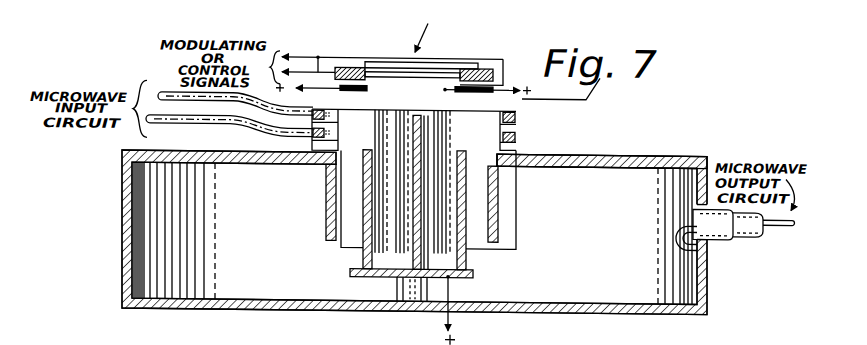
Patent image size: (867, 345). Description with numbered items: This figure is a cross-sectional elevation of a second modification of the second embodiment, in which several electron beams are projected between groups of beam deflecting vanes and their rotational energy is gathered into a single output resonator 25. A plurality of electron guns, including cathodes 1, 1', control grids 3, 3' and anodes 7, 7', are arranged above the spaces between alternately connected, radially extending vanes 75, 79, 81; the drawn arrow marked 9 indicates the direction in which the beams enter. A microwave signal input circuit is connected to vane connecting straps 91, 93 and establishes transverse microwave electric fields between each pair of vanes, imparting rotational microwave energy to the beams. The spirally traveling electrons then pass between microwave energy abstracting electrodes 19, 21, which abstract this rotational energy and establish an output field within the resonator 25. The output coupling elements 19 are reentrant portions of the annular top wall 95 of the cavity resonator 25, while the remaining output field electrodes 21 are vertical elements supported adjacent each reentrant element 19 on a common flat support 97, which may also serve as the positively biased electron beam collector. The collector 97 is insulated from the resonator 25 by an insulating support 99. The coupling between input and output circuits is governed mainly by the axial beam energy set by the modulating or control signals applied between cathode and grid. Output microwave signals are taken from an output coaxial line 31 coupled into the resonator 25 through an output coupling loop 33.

The cathode 1 is at (350, 55).
The cathode 1' is at (479, 58).
The control grid 3 is at (421, 79).
The control grid 3' is at (412, 84).
The anode 7 is at (361, 97).
The anode 7' is at (463, 99).
The electron beam input 9 is at (426, 34).
The microwave energy abstracting electrode 19 is at (326, 203).
The output field electrode 21 is at (363, 249).
The output resonator 25 is at (583, 240).
The output coaxial line 31 is at (738, 238).
The output coupling loop 33 is at (672, 231).
The radially extending vane 75 is at (414, 247).
The radially extending vane 79 is at (352, 107).
The radially extending vane 81 is at (473, 112).
The vane connecting strap 91 is at (314, 108).
The vane connecting strap 93 is at (313, 132).
The annular top wall 95 is at (618, 151).
The common flat support 97 is at (473, 272).
The insulating support 99 is at (397, 287).